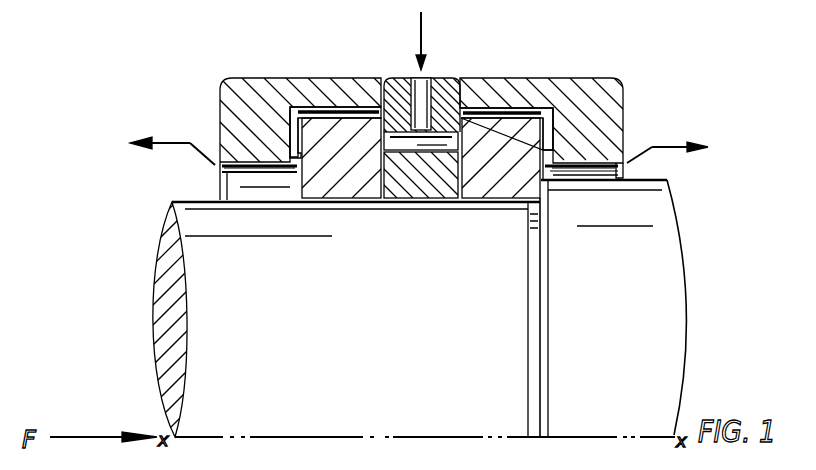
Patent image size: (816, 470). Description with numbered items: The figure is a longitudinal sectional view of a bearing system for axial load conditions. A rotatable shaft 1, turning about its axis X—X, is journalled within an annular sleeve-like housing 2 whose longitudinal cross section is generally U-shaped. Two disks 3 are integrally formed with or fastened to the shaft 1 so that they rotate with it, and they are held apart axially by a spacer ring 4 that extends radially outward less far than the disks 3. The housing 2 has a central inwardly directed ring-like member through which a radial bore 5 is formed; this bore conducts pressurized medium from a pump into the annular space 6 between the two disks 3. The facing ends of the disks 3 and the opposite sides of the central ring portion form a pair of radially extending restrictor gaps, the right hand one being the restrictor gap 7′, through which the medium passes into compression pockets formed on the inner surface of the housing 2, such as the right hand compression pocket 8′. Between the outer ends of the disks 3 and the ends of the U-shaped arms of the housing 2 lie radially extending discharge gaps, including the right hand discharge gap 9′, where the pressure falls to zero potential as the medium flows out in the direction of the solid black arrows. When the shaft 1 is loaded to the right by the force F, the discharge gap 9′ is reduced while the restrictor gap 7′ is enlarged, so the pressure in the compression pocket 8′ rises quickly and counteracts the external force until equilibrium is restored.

The shaft 1 is at (222, 305).
The housing 2 is at (248, 82).
The disks 3 is at (343, 130).
The spacer ring 4 is at (395, 199).
The radial bore 5 is at (428, 85).
The annular space 6 is at (445, 150).
The right hand restrictor gap 7′ is at (460, 108).
The right hand compression pocket 8′ is at (552, 122).
The right hand discharge gap 9′ is at (547, 160).